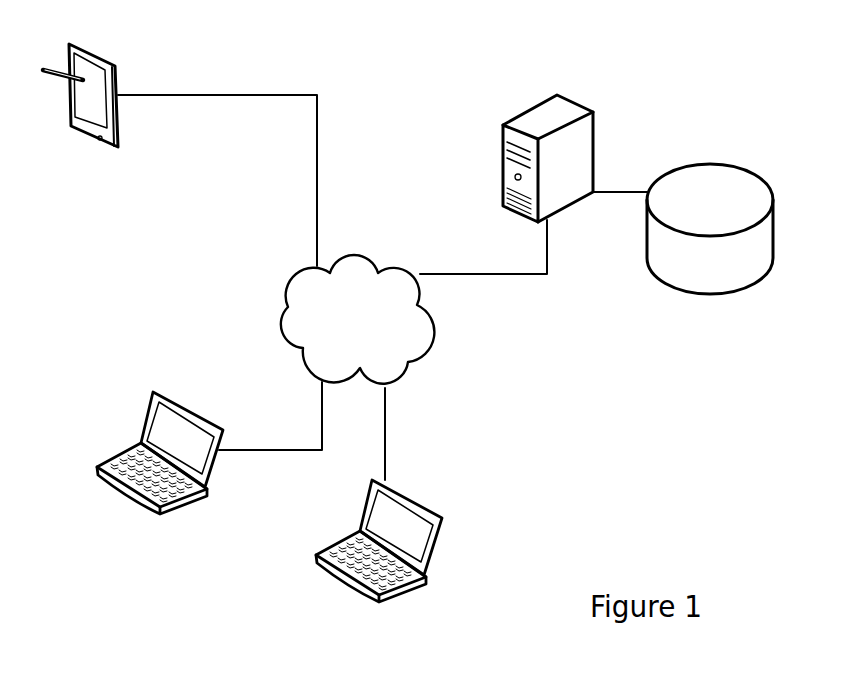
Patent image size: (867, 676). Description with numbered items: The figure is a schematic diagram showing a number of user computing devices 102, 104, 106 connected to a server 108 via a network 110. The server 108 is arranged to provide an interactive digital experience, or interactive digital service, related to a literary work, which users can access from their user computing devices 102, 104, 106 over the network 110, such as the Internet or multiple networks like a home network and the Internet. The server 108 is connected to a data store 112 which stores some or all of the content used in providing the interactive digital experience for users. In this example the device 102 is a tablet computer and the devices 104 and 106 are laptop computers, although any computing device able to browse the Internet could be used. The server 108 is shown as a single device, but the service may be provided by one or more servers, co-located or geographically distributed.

The user computing device 102 is at (113, 63).
The user computing device 104 is at (172, 400).
The user computing device 106 is at (423, 498).
The server 108 is at (593, 128).
The network 110 is at (438, 328).
The data store 112 is at (730, 163).